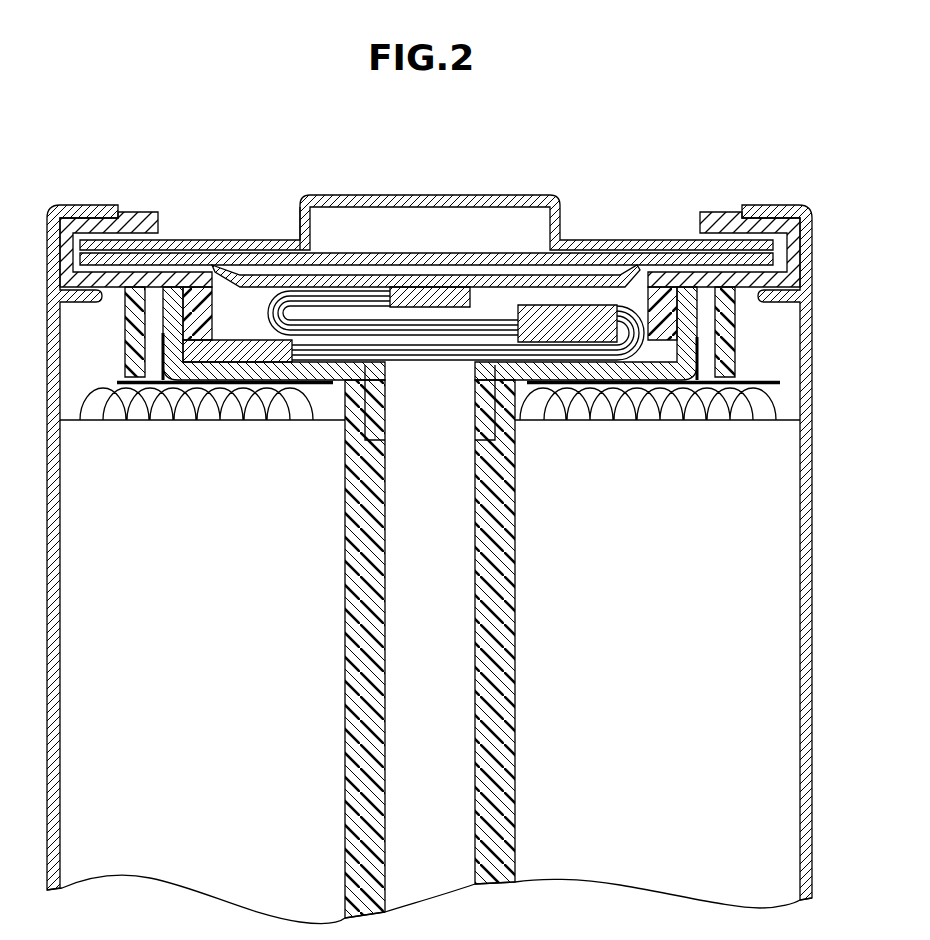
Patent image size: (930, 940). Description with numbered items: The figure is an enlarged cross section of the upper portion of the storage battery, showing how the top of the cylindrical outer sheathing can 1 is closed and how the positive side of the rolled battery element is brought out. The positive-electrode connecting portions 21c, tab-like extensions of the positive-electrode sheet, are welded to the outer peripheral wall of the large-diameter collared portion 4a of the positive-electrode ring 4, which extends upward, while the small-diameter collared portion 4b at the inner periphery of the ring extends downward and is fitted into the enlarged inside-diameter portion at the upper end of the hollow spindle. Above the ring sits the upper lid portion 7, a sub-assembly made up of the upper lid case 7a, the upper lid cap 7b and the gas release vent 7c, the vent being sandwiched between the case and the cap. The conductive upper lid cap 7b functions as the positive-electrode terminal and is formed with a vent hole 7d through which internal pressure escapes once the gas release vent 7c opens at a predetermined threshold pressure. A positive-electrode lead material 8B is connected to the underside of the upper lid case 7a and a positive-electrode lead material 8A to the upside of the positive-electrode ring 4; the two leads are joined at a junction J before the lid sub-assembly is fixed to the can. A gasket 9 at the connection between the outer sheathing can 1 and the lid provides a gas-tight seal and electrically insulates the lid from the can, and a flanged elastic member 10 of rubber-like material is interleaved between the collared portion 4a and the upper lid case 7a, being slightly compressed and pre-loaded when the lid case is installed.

The outer sheathing can 1 is at (808, 495).
The positive-electrode ring 4 is at (451, 602).
The large-diameter collared portion 4a is at (697, 313).
The small-diameter collared portion 4b is at (376, 390).
The upper lid portion 7 is at (426, 202).
The upper lid case 7a is at (557, 287).
The upper lid cap 7b is at (400, 196).
The gas release vent 7c is at (457, 256).
The vent hole 7d is at (300, 250).
The positive-electrode lead material 8A is at (444, 354).
The positive-electrode lead material 8B is at (343, 294).
The gasket 9 is at (744, 222).
The flanged elastic member 10 is at (213, 282).
The positive-electrode connecting portions 21c is at (100, 390).
The junction J is at (586, 323).